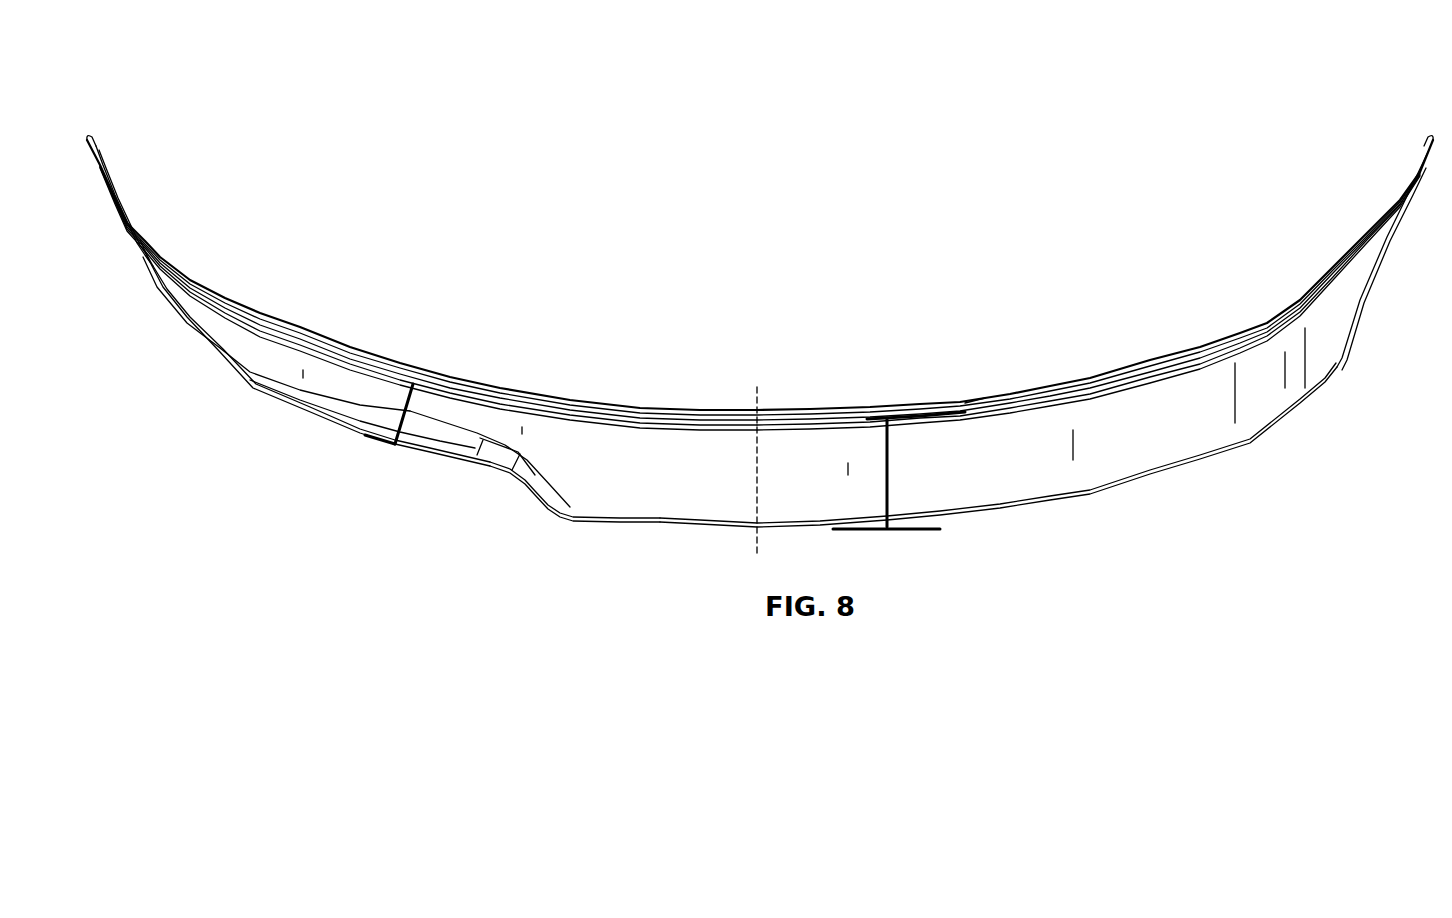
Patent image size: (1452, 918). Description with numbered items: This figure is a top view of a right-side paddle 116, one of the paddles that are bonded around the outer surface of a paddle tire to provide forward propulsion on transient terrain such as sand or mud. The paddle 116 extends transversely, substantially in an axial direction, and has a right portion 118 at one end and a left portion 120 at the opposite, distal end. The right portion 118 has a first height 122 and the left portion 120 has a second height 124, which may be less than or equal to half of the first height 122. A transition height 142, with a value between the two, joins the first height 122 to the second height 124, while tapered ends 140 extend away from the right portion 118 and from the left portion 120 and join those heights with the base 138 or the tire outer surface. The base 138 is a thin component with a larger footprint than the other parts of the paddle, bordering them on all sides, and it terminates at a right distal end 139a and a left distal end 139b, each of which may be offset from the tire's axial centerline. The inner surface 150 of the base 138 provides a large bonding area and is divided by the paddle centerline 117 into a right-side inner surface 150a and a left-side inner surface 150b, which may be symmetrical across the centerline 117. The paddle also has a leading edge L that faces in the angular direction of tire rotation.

The right-side paddle 116 is at (518, 153).
The centerline 117 is at (758, 398).
The right portion 118 is at (1187, 468).
The left portion 120 is at (308, 413).
The first height 122 is at (888, 468).
The second height 124 is at (410, 413).
The base 138 is at (103, 165).
The right distal end 139a is at (1434, 137).
The left distal end 139b is at (87, 136).
The tapered ends 140 is at (168, 287).
The transition height 142 is at (547, 482).
The inner surface 150 is at (405, 351).
The right-side inner surface 150a is at (1127, 367).
The left-side inner surface 150b is at (303, 343).
The leading edge L is at (972, 402).